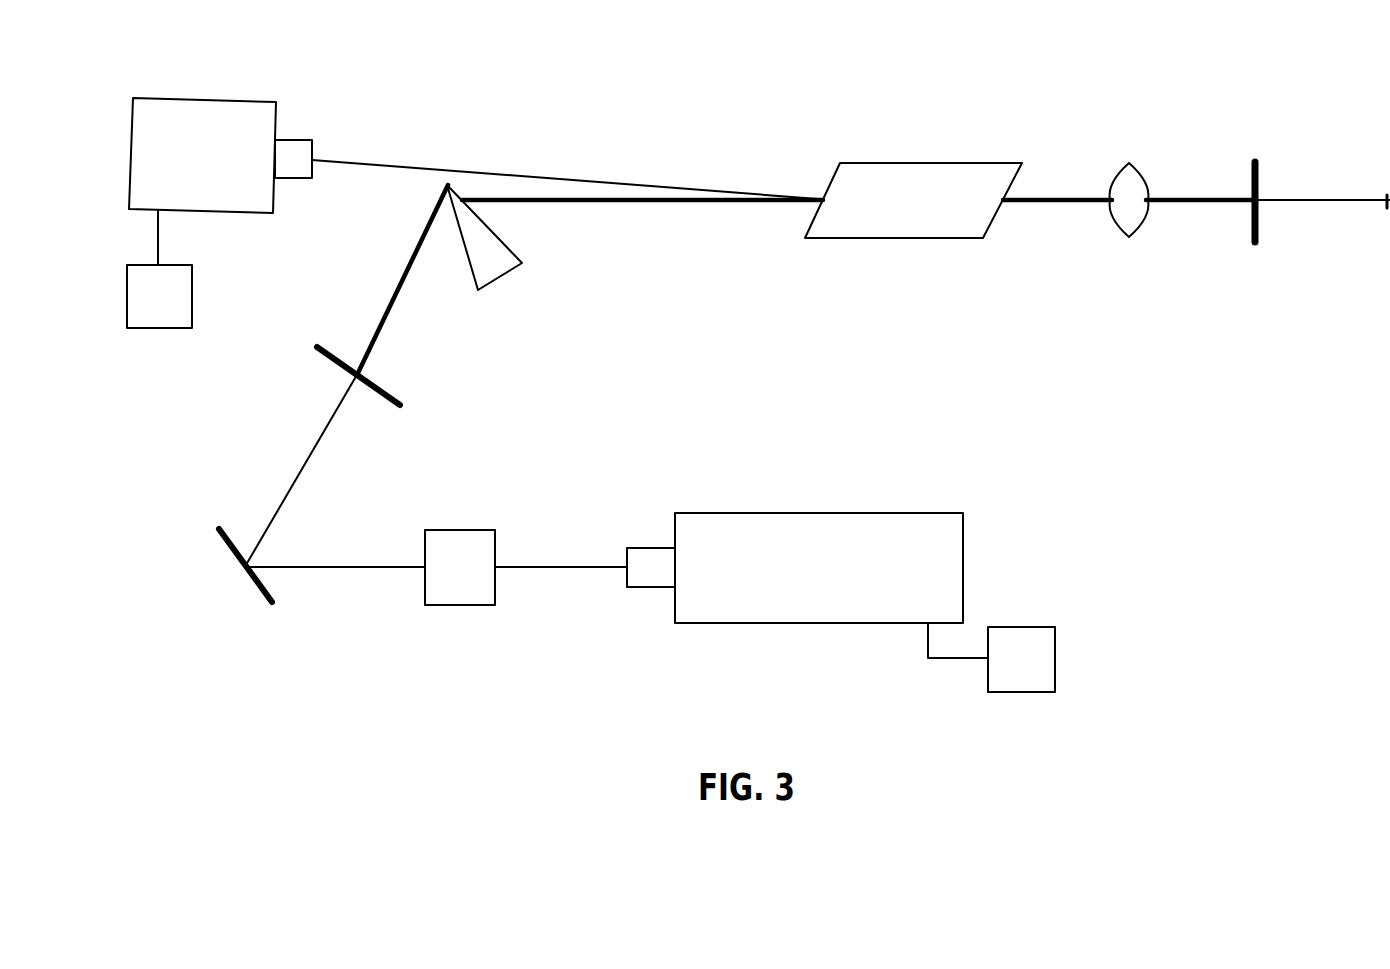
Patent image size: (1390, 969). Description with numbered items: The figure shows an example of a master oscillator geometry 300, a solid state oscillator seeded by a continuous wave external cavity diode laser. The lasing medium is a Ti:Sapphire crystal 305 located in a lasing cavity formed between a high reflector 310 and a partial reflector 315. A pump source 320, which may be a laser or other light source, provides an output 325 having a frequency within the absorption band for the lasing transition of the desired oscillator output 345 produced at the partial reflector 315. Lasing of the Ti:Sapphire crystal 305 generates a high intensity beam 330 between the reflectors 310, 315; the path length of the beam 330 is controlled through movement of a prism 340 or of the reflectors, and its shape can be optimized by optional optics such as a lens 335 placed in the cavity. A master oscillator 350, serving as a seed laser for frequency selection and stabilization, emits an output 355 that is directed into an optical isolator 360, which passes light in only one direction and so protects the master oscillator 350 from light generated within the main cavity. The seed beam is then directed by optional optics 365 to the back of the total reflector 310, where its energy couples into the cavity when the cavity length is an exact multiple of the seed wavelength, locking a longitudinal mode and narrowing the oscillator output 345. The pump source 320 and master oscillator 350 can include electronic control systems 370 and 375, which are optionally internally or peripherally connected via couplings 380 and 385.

The master oscillator geometry 300 is at (1157, 506).
The Ti:Sapphire crystal 305 is at (907, 240).
The high reflector 310 is at (393, 392).
The partial reflector 315 is at (1253, 228).
The pump source 320 is at (265, 102).
The output 325 is at (497, 170).
The high intensity beam 330 is at (398, 295).
The lens 335 is at (1107, 215).
The prism 340 is at (517, 268).
The oscillator output 345 is at (1325, 197).
The master oscillator 350 is at (890, 513).
The output 355 is at (557, 566).
The optical isolator 360 is at (457, 605).
The optional optics 365 is at (263, 597).
The electronic control system 370 is at (178, 328).
The electronic control system 375 is at (1020, 627).
The coupling 380 is at (158, 243).
The coupling 385 is at (928, 640).